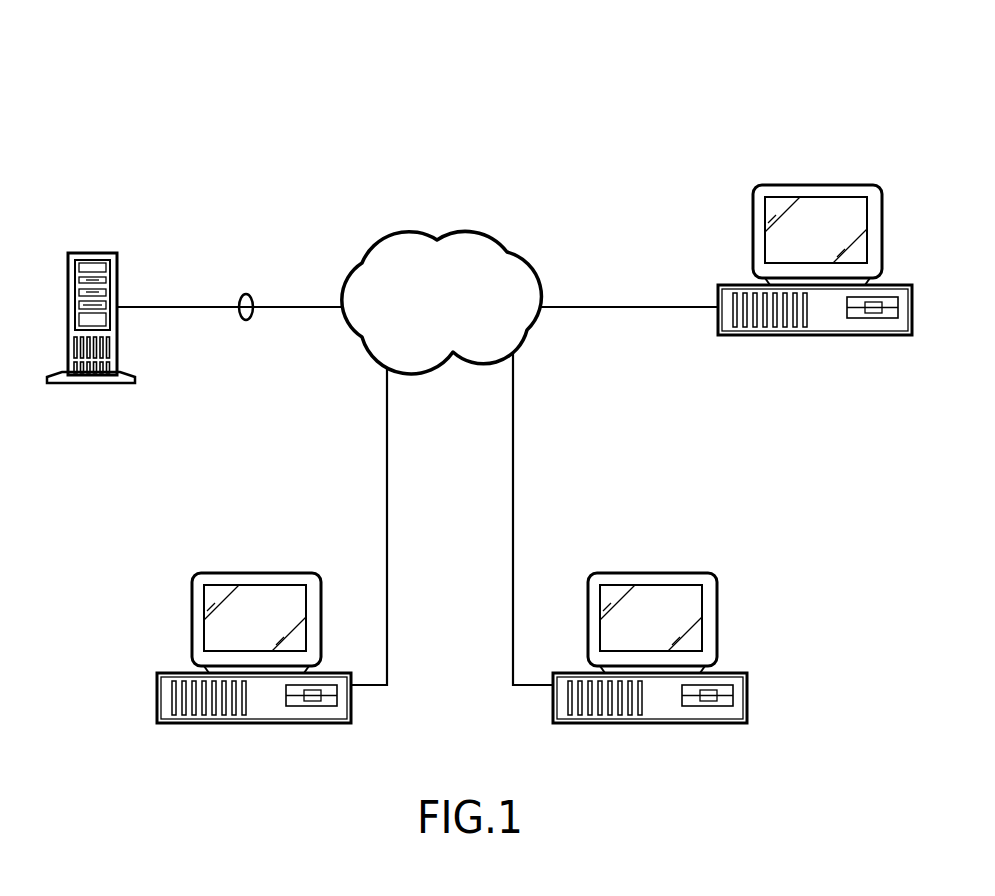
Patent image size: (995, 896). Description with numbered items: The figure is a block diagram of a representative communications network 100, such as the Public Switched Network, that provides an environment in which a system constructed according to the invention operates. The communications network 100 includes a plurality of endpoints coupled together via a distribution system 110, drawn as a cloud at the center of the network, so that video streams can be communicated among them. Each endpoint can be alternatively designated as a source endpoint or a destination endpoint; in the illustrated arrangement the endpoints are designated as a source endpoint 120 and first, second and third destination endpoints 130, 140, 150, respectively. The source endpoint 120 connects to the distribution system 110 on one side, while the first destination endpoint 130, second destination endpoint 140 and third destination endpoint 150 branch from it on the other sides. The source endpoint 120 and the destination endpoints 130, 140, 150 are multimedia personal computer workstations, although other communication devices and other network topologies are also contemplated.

The communications network 100 is at (424, 297).
The distribution system 110 is at (246, 294).
The source endpoint 120 is at (83, 233).
The first destination endpoint 130 is at (810, 163).
The second destination endpoint 140 is at (249, 553).
The third destination endpoint 150 is at (653, 553).